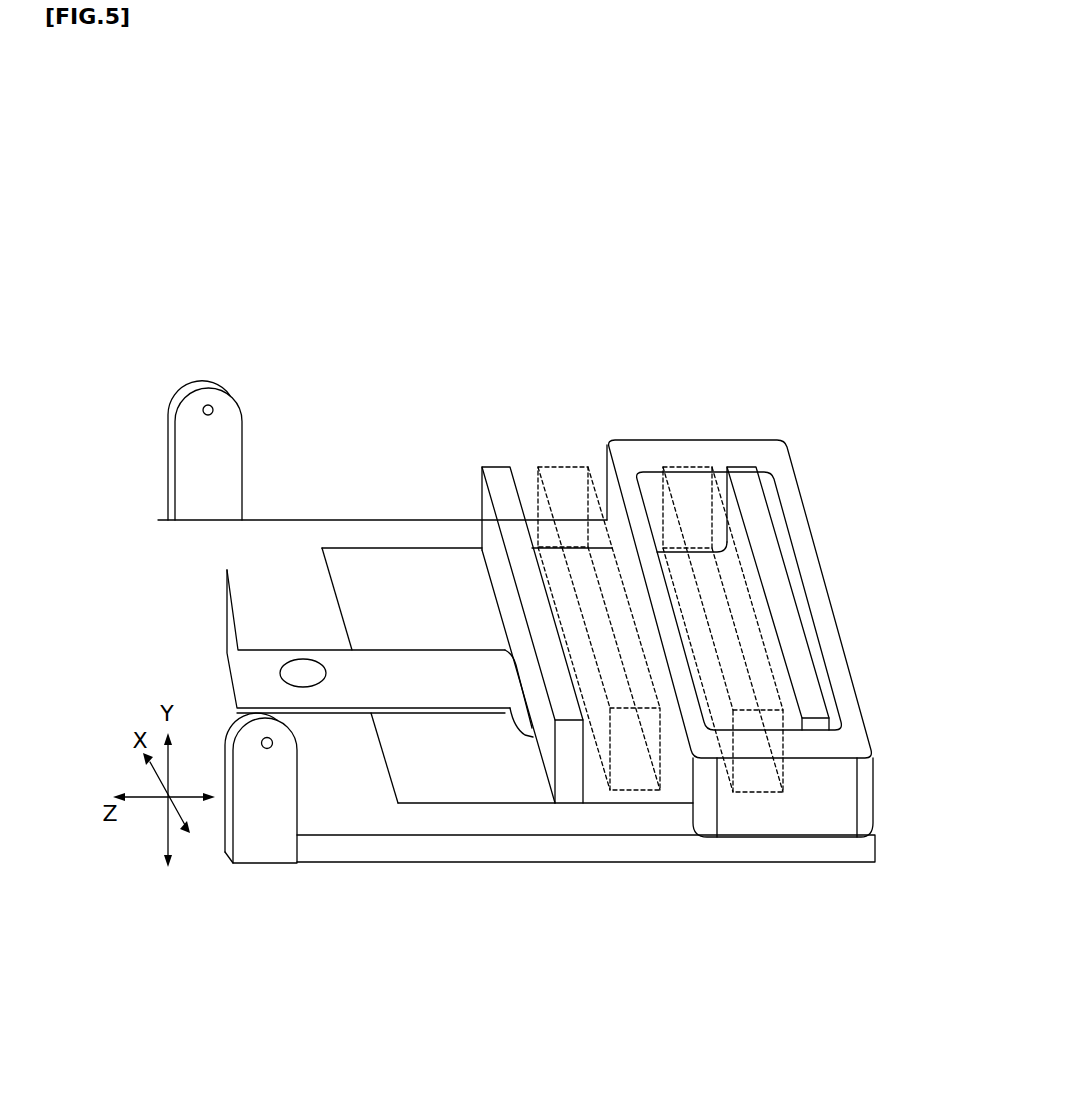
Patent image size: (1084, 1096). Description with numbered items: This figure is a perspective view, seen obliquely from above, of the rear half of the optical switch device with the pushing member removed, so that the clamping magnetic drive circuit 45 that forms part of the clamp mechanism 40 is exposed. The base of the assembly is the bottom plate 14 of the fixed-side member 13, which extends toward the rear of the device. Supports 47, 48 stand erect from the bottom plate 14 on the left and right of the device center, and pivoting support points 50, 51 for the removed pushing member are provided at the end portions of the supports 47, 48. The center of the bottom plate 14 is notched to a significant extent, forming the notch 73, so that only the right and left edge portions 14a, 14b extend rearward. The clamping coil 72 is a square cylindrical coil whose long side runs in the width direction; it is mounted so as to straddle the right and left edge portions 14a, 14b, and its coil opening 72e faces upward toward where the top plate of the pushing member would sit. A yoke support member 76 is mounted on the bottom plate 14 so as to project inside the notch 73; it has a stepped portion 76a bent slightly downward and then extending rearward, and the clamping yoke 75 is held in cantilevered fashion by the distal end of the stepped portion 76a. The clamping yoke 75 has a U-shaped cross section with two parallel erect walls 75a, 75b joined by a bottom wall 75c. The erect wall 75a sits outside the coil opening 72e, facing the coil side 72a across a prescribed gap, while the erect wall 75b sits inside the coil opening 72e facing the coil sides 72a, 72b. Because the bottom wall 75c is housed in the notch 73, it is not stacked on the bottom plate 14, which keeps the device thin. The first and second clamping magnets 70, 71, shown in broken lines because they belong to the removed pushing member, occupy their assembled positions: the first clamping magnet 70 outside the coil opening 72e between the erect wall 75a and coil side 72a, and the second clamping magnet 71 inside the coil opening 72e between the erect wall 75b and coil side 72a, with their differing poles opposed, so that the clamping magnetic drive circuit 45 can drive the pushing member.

The clamp mechanism 40 is at (544, 619).
The clamping magnetic drive circuit 45 is at (830, 357).
The fixed-side member 13 is at (584, 880).
The bottom plate 14 is at (375, 845).
The right edge portion 14a is at (548, 820).
The left edge portion 14b is at (407, 527).
The support 47 is at (255, 822).
The support 48 is at (184, 386).
The pivoting support point 50 is at (273, 744).
The pivoting support point 51 is at (214, 408).
The first clamping magnet 70 is at (563, 467).
The second clamping magnet 71 is at (690, 470).
The clamping coil 72 is at (809, 527).
The coil side 72a is at (632, 520).
The coil side 72b is at (827, 622).
The coil opening 72e is at (790, 682).
The notch 73 is at (455, 775).
The clamping yoke 75 is at (680, 648).
The erect wall 75a is at (495, 483).
The erect wall 75b is at (748, 507).
The bottom wall 75c is at (593, 787).
The yoke support member 76 is at (372, 660).
The stepped portion 76a is at (528, 740).